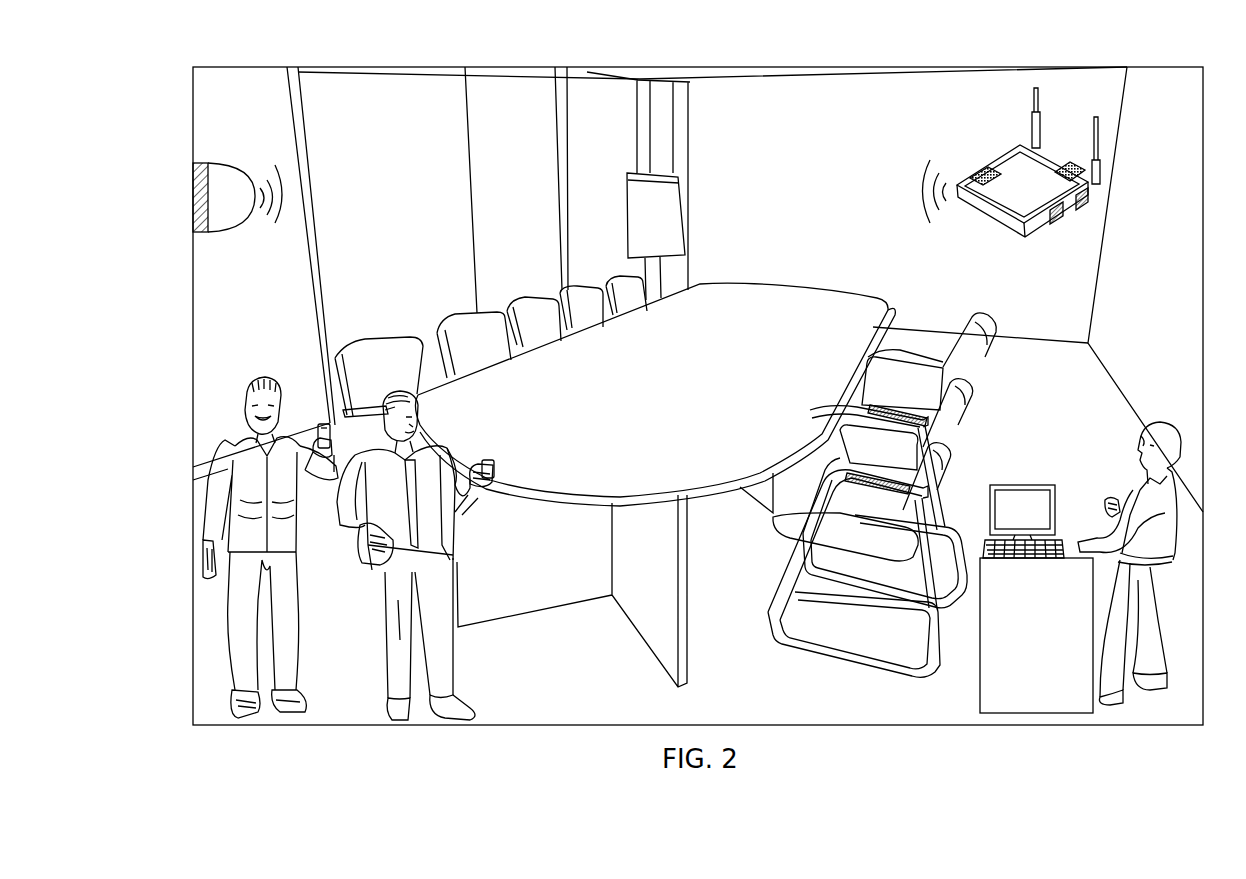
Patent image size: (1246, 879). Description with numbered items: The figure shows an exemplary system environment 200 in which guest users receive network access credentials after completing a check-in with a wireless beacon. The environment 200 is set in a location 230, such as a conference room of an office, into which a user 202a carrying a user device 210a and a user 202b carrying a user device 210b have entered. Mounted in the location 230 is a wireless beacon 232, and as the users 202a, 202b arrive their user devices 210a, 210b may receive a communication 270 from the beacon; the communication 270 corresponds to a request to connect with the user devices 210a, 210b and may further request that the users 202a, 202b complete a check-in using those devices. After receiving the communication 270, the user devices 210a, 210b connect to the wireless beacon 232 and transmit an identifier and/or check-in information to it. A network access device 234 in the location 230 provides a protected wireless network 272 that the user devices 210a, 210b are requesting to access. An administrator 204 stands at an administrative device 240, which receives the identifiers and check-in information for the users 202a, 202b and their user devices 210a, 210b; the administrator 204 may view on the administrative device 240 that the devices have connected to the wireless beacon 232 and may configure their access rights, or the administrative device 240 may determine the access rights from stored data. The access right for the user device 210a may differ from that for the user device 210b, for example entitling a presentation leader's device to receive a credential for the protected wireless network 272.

The environment 200 is at (795, 59).
The location 230 is at (850, 116).
The wireless beacon 232 is at (277, 171).
The communication 270 is at (230, 223).
The protected wireless network 272 is at (937, 170).
The network access device 234 is at (1005, 230).
The administrative device 240 is at (1032, 485).
The administrator 204 is at (1137, 455).
The user 202a is at (292, 613).
The user 202b is at (440, 665).
The user device 210a is at (323, 427).
The user device 210b is at (487, 460).